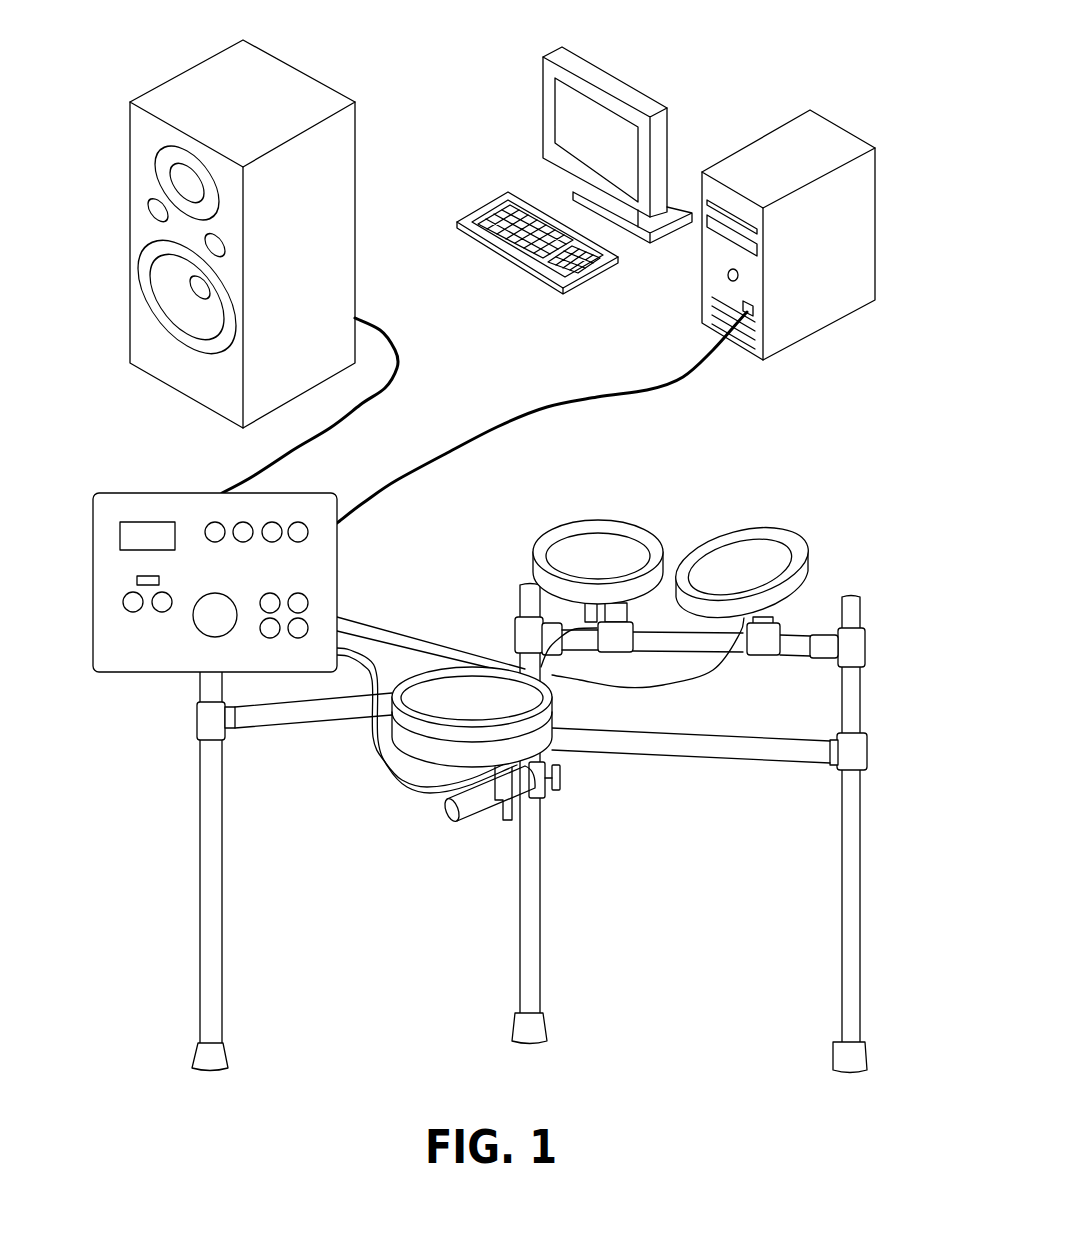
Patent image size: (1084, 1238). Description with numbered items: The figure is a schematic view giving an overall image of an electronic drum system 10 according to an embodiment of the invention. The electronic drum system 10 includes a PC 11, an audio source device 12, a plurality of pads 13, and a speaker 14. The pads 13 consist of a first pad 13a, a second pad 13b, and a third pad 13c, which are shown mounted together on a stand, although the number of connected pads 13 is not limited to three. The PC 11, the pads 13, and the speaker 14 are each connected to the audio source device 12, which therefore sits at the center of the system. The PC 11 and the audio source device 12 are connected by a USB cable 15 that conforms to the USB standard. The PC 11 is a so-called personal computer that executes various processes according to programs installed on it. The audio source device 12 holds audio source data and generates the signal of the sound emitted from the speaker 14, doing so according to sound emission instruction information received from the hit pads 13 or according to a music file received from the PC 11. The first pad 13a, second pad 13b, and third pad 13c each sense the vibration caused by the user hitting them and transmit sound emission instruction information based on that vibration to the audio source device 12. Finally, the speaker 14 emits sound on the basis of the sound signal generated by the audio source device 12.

The electronic drum system 10 is at (817, 64).
The PC 11 is at (837, 310).
The audio source device 12 is at (108, 660).
The pads 13 is at (529, 776).
The first pad 13a is at (482, 667).
The second pad 13b is at (562, 558).
The third pad 13c is at (688, 556).
The speaker 14 is at (347, 261).
The USB cable 15 is at (667, 388).